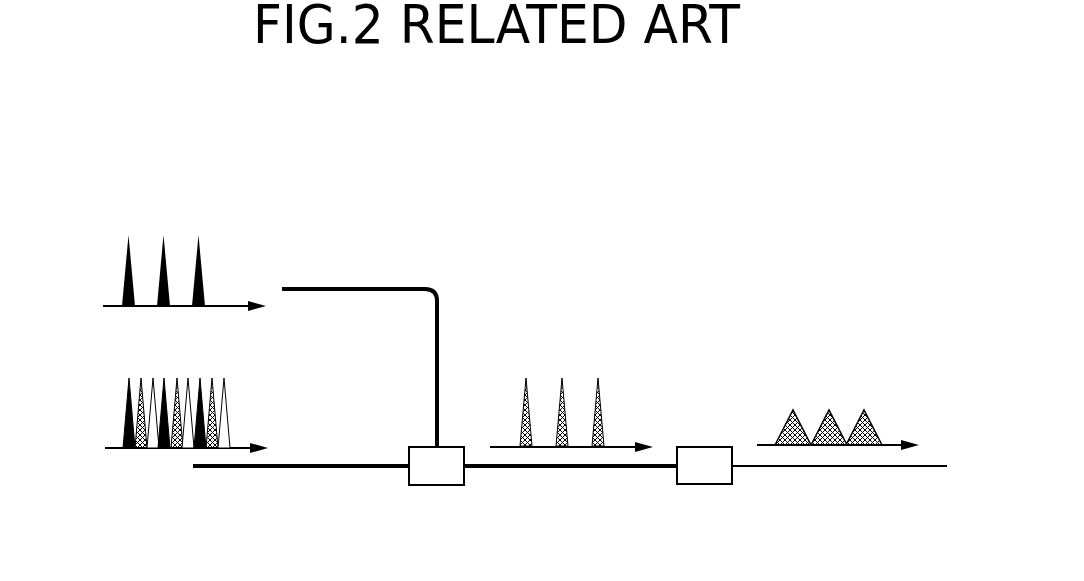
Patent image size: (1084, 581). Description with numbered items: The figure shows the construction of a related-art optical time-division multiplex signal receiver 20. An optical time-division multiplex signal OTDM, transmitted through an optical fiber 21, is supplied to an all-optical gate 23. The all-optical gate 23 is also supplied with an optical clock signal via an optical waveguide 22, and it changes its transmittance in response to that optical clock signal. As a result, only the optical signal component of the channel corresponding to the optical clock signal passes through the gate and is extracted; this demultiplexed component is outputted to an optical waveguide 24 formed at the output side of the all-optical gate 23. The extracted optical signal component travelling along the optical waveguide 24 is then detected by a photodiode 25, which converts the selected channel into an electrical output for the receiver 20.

The optical time-division multiplex signal receiver 20 is at (478, 156).
The optical fiber 21 is at (277, 470).
The optical waveguide 22 is at (386, 286).
The all-optical gate 23 is at (437, 487).
The optical waveguide 24 is at (620, 470).
The photodiode 25 is at (705, 487).